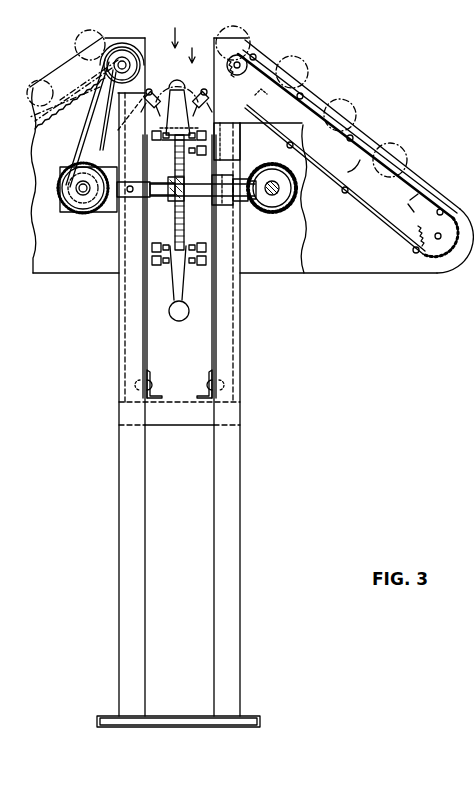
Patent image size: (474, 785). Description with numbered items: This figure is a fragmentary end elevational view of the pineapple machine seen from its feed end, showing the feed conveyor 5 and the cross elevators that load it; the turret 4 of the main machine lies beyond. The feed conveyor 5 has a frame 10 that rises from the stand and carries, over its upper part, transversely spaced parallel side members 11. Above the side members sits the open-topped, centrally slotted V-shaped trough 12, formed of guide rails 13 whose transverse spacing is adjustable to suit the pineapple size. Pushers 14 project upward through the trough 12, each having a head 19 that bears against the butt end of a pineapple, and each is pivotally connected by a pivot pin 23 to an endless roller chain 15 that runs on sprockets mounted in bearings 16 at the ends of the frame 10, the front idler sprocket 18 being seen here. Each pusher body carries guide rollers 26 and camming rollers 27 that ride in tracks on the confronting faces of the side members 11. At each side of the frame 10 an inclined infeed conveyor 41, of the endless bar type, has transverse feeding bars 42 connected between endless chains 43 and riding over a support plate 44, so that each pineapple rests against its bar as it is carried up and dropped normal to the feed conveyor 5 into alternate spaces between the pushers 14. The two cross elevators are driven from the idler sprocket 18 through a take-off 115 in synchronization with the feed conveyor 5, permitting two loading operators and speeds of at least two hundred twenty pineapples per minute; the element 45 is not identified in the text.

The turret 4 is at (75, 75).
The feed conveyor 5 is at (174, 30).
The frame 10 is at (178, 428).
The side members 11 is at (210, 132).
The trough 12 is at (193, 48).
The guide rails 13 is at (176, 97).
The pushers 14 is at (180, 78).
The roller chain 15 is at (184, 232).
The bearings 16 is at (230, 180).
The front sprocket 18 is at (184, 208).
The heads 19 is at (169, 310).
The pivot pin 23 is at (174, 246).
The guide rollers 26 is at (207, 150).
The camming rollers 27 is at (207, 137).
The infeed conveyor 41 is at (60, 78).
The feeding bars 42 is at (31, 117).
The endless chains 43 is at (52, 128).
The support plate 44 is at (353, 174).
The guide line 45 is at (65, 110).
The take-off 115 is at (106, 205).